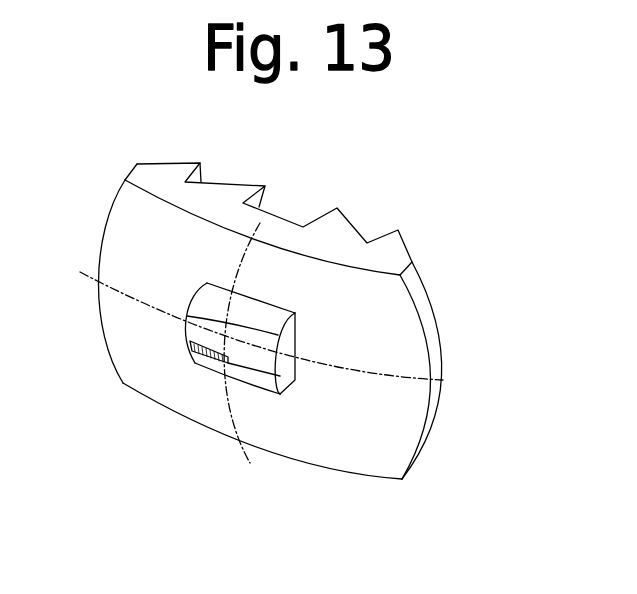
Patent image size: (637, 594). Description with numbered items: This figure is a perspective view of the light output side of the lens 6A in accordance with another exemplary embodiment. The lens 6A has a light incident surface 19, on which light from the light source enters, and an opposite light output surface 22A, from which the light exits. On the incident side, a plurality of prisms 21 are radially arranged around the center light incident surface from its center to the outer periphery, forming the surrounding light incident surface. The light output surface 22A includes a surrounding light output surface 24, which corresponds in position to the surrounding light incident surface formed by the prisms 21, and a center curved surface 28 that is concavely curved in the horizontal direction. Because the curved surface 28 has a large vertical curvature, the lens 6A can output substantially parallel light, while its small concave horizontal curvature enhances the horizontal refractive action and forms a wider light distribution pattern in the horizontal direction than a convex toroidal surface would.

The light incident surface 19 is at (184, 129).
The lens 6A is at (396, 135).
The prisms 21 is at (243, 188).
The surrounding light output surface 24 is at (388, 310).
The light output surface 22A is at (267, 523).
The curved surface 28 is at (207, 340).